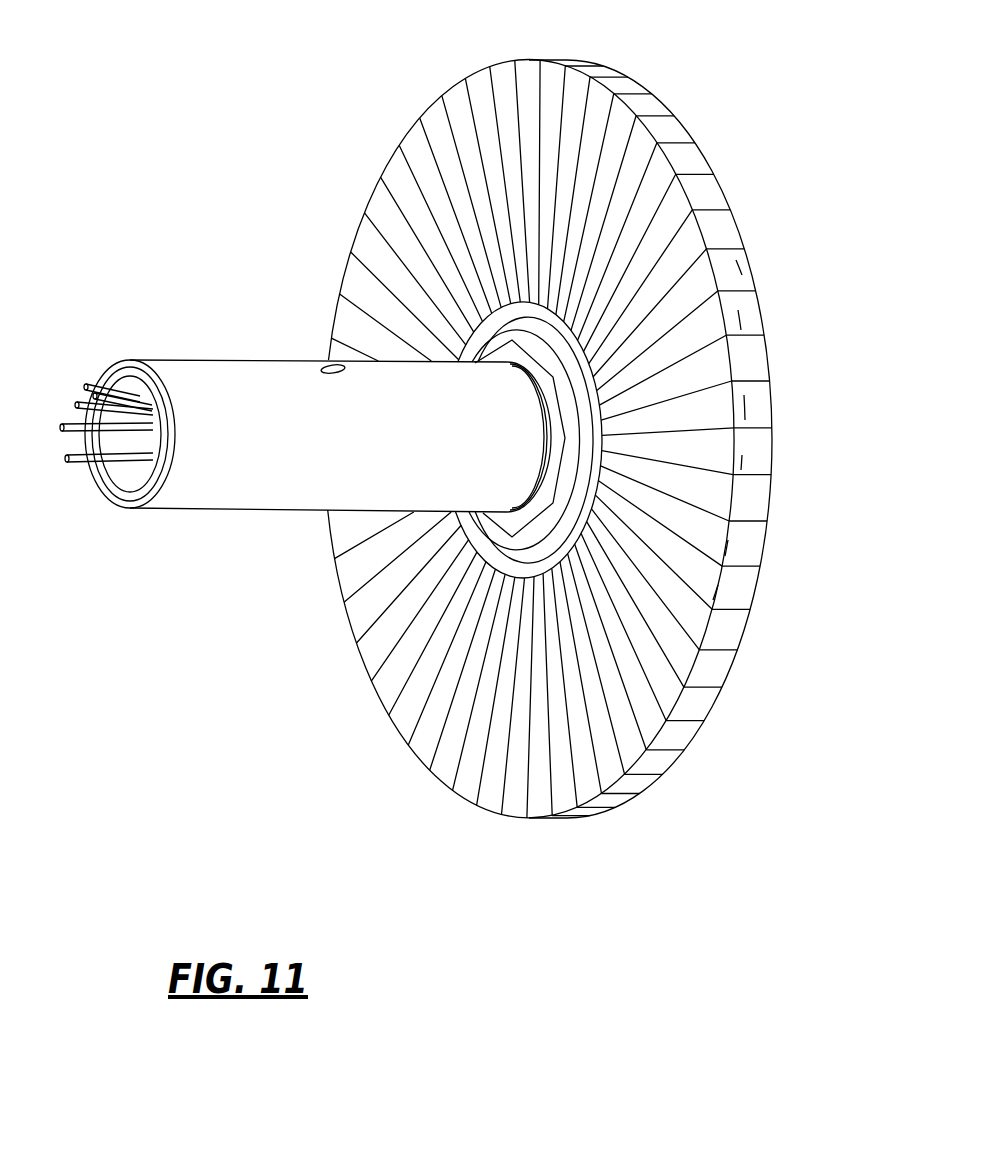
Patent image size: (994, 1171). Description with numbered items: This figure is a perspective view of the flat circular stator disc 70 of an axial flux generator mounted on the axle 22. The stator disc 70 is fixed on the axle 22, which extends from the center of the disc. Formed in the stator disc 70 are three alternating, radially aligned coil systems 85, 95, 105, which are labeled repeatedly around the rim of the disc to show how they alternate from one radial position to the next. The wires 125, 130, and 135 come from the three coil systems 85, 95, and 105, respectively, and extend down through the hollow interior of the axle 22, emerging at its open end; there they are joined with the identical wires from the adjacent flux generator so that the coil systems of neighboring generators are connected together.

The stator disc 70 is at (667, 88).
The axle 22 is at (202, 358).
The coil system 85 is at (718, 242).
The coil system 95 is at (742, 270).
The coil system 105 is at (738, 318).
The wire 125 is at (90, 382).
The wire 130 is at (87, 423).
The wire 135 is at (133, 390).